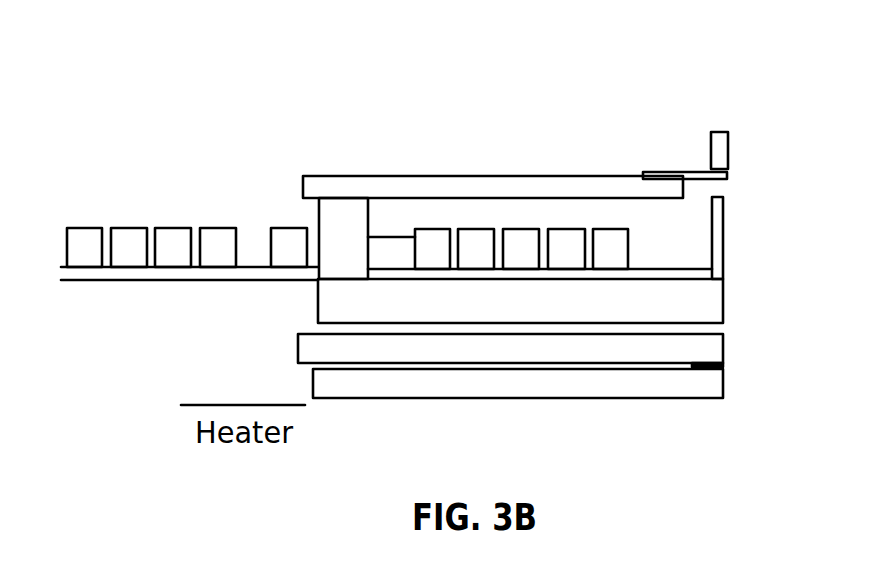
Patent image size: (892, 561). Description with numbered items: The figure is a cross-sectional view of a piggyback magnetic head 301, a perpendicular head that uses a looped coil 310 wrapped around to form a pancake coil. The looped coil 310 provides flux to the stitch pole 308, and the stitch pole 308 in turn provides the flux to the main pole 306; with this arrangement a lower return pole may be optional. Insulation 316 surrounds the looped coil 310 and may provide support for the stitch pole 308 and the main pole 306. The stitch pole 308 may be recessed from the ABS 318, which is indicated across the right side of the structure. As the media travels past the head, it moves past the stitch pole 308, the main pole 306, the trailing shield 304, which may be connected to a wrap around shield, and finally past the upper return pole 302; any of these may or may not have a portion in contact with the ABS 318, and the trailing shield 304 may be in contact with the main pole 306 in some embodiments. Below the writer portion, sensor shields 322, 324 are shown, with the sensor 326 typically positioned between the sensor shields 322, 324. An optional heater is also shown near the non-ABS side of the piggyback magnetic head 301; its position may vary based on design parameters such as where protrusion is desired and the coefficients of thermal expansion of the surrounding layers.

The piggyback magnetic head 301 is at (349, 108).
The upper return pole 302 is at (730, 147).
The trailing shield 304 is at (725, 243).
The main pole 306 is at (688, 172).
The stitch pole 308 is at (523, 176).
The looped coil 310 is at (605, 229).
The insulation 316 is at (582, 313).
The ABS 318 is at (735, 296).
The sensor shield 322 is at (298, 352).
The sensor shield 324 is at (313, 377).
The sensor 326 is at (713, 366).